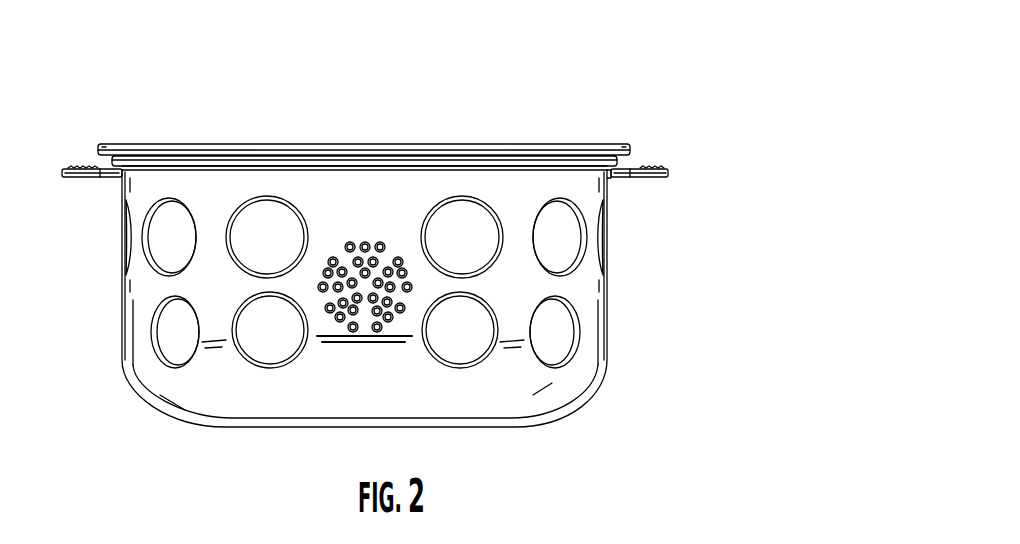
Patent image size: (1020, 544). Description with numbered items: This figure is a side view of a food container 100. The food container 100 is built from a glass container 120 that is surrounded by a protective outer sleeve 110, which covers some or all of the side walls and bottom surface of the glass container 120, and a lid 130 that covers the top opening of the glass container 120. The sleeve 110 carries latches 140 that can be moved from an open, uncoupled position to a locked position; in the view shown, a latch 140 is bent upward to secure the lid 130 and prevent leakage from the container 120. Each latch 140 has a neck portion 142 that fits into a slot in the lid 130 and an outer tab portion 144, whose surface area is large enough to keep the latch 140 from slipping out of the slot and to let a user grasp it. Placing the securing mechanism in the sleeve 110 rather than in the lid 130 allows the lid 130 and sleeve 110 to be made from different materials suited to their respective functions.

The food container 100 is at (133, 98).
The protective outer sleeve 110 is at (148, 386).
The glass container 120 is at (618, 157).
The lid 130 is at (387, 144).
The latch 140 is at (673, 164).
The neck portion 142 is at (615, 178).
The outer tab portion 144 is at (652, 178).